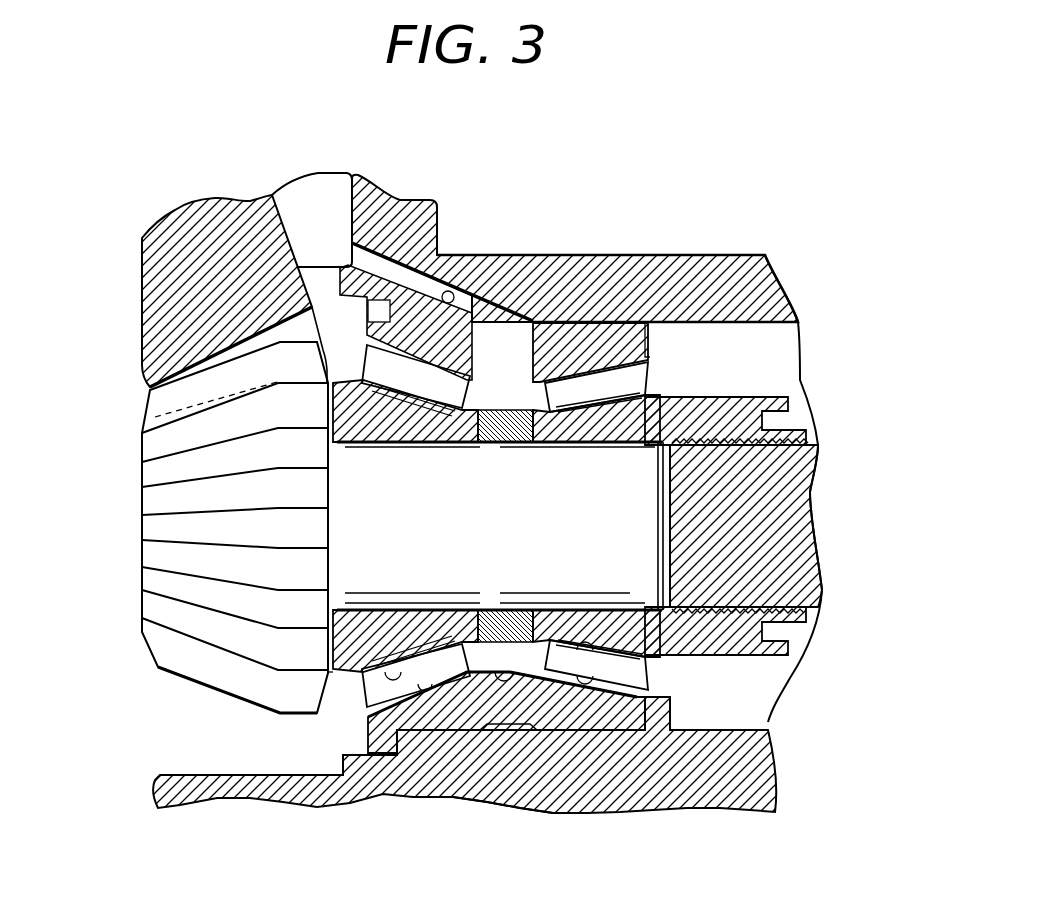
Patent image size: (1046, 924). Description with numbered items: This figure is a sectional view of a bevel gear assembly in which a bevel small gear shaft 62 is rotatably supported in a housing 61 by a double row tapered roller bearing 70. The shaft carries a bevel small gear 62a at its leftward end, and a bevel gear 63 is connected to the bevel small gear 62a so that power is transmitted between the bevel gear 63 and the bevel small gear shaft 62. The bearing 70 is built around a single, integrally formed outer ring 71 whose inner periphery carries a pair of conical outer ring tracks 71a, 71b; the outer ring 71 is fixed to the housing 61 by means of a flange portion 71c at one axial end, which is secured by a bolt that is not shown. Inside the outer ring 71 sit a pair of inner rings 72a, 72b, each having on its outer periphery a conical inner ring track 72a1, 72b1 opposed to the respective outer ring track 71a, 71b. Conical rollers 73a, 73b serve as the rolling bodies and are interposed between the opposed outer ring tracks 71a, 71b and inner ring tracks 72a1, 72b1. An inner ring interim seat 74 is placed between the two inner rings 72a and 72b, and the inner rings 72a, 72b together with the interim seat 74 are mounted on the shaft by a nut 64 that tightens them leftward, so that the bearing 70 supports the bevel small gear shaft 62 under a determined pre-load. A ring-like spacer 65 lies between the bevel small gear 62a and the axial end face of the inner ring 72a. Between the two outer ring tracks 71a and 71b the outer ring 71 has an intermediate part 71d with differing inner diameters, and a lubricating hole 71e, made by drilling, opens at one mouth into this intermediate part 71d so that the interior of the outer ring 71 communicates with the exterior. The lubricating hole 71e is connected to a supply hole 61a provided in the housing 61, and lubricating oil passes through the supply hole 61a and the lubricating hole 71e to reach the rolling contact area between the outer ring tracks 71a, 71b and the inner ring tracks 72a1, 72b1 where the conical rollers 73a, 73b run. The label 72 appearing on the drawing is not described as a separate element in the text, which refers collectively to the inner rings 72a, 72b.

The housing 61 is at (650, 252).
The supply hole 61a is at (452, 292).
The bevel small gear shaft 62 is at (780, 523).
The bevel small gear 62a is at (212, 638).
The bevel gear 63 is at (155, 291).
The nut 64 is at (750, 397).
The ring-like spacer 65 is at (337, 678).
The double row tapered roller bearing 70 is at (656, 713).
The outer ring 71 is at (458, 716).
The outer ring track 71a is at (420, 682).
The outer ring track 71b is at (590, 700).
The flange portion 71c is at (357, 800).
The intermediate part 71d is at (510, 682).
The lubricating hole 71e is at (520, 330).
The inner ring 72 is at (547, 446).
The inner ring 72a is at (448, 425).
The inner ring track 72a1 is at (393, 634).
The inner ring 72b is at (583, 428).
The inner ring track 72b1 is at (583, 634).
The conical rollers 73a is at (398, 392).
The conical rollers 73b is at (621, 398).
The inner ring interim seat 74 is at (498, 420).